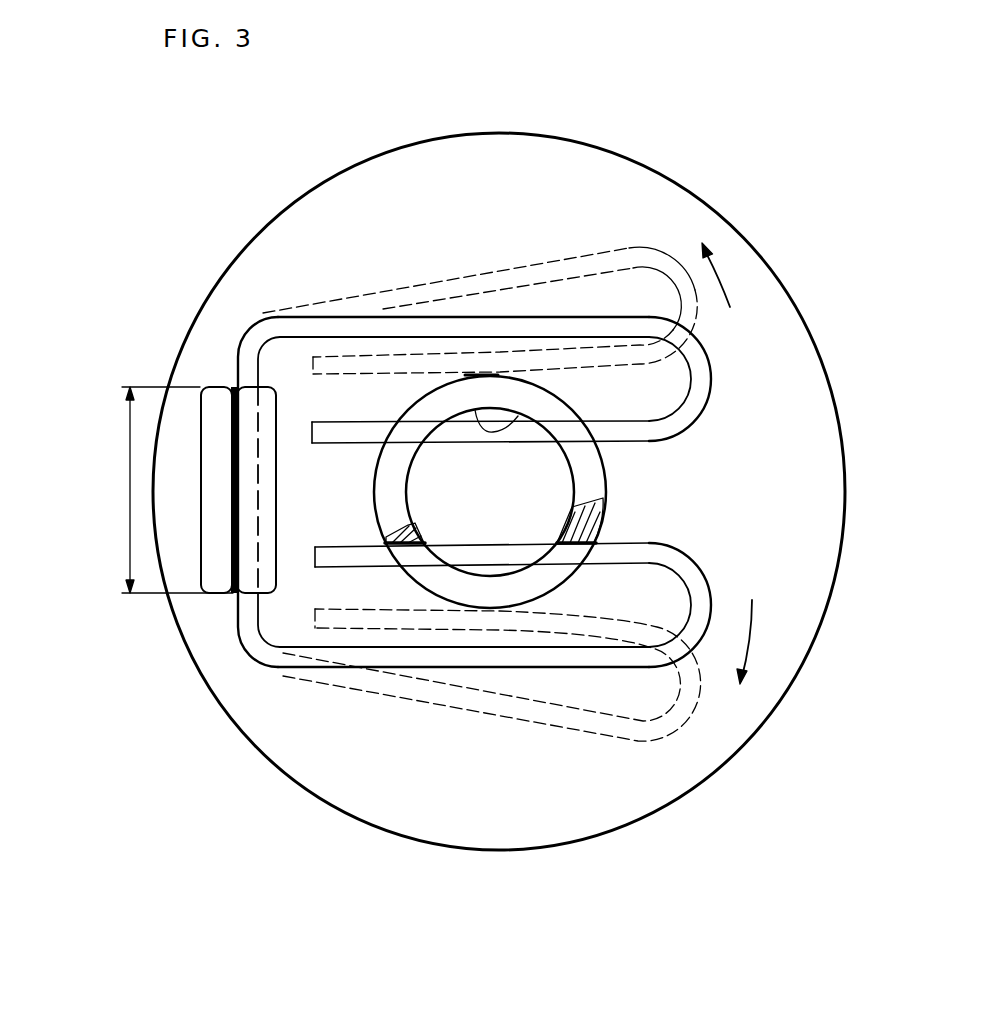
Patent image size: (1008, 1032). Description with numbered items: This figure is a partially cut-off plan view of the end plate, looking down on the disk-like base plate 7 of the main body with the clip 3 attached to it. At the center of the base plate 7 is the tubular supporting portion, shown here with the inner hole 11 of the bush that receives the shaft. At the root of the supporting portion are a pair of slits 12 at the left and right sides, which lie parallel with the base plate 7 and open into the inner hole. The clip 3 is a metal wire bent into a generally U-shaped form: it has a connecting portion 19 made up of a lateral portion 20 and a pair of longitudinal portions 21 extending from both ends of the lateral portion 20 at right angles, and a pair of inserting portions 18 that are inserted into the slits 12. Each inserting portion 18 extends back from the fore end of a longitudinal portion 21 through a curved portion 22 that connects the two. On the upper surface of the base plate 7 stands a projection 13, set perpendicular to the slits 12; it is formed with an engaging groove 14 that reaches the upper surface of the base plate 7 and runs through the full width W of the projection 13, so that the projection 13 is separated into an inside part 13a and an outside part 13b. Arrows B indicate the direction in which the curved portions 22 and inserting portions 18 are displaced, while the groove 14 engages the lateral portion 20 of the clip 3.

The clip 3 is at (464, 493).
The base plate 7 is at (313, 208).
The inner hole of the bush 11 is at (518, 418).
The slits 12 is at (577, 421).
The projection 13 is at (148, 554).
The inside part 13a is at (250, 585).
The outside part 13b is at (213, 543).
The engaging groove 14 is at (260, 442).
The inserting portions 18 is at (360, 435).
The connecting portion 19 is at (341, 416).
The lateral portion 20 is at (238, 367).
The longitudinal portions 21 is at (390, 320).
The curved portion 22 is at (697, 373).
The rotation direction B is at (720, 278).
The width W is at (159, 490).